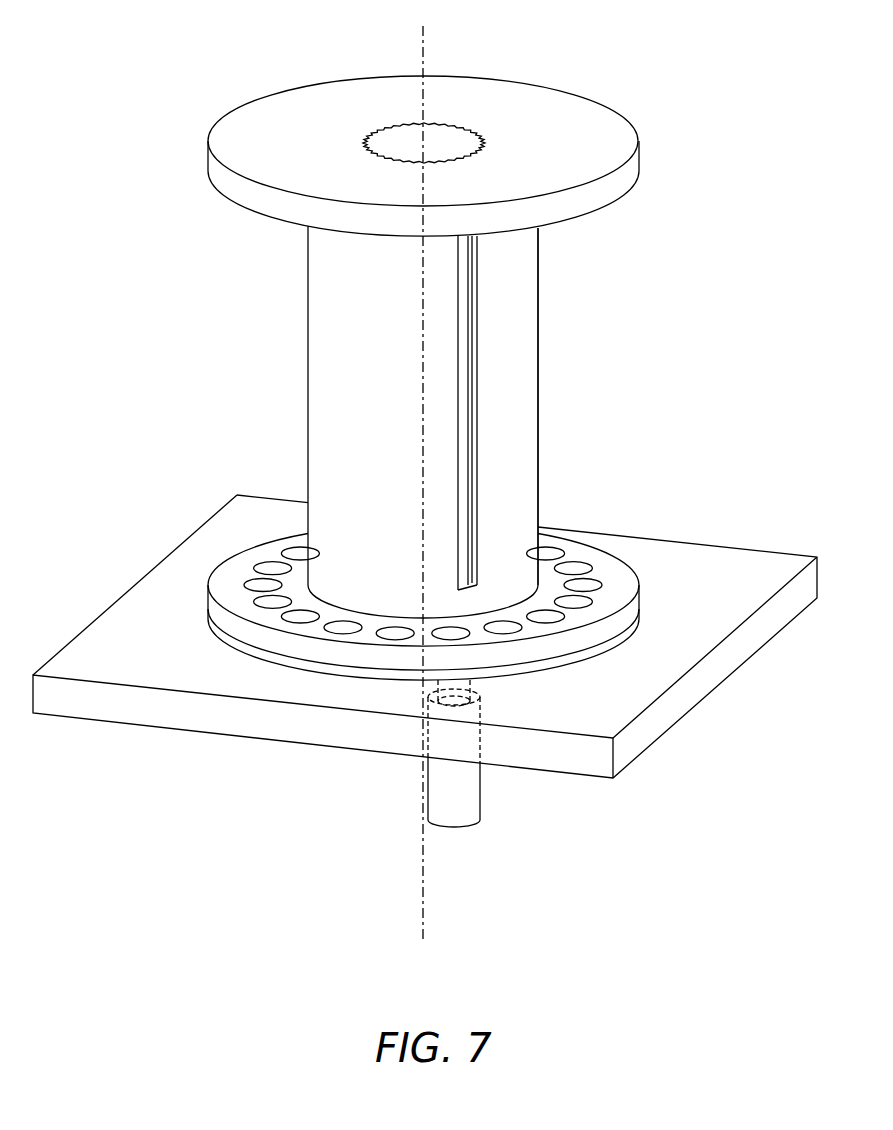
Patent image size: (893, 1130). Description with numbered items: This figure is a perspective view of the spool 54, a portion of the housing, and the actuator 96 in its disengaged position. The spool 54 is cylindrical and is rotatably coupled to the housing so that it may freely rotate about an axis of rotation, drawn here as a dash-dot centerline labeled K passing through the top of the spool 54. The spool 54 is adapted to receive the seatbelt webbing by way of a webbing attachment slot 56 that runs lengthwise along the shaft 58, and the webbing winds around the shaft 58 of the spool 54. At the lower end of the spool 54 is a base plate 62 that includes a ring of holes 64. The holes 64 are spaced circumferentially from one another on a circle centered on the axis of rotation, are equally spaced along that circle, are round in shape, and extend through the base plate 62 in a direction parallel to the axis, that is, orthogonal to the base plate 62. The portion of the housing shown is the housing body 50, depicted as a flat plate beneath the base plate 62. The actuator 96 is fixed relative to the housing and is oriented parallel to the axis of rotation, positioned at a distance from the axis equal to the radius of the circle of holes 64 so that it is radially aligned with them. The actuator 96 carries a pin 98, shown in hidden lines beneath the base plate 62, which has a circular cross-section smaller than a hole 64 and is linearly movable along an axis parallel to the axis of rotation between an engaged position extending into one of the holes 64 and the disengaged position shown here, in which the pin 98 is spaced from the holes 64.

The central axis K is at (424, 472).
The housing body 50 is at (212, 735).
The spool 54 is at (308, 340).
The webbing attachment slot 56 is at (478, 355).
The shaft 58 is at (538, 415).
The base plate 62 is at (207, 597).
The holes 64 is at (573, 532).
The actuator 96 is at (480, 800).
The pin 98 is at (480, 692).